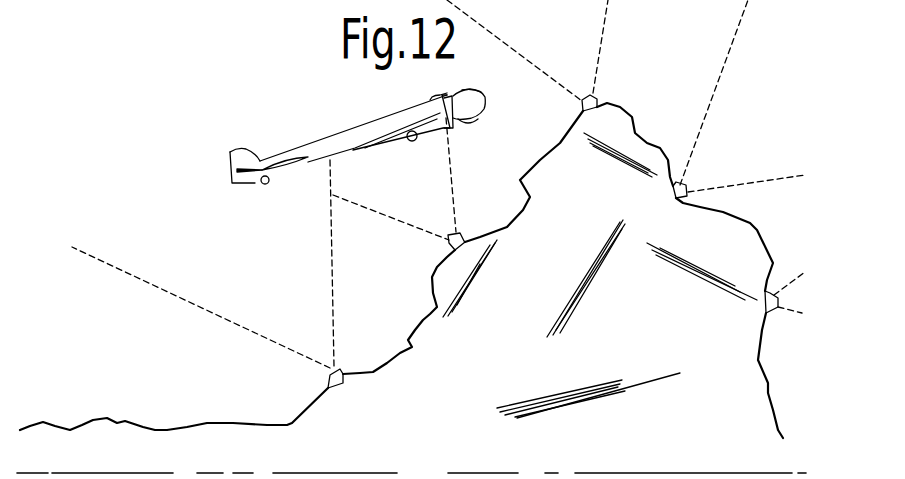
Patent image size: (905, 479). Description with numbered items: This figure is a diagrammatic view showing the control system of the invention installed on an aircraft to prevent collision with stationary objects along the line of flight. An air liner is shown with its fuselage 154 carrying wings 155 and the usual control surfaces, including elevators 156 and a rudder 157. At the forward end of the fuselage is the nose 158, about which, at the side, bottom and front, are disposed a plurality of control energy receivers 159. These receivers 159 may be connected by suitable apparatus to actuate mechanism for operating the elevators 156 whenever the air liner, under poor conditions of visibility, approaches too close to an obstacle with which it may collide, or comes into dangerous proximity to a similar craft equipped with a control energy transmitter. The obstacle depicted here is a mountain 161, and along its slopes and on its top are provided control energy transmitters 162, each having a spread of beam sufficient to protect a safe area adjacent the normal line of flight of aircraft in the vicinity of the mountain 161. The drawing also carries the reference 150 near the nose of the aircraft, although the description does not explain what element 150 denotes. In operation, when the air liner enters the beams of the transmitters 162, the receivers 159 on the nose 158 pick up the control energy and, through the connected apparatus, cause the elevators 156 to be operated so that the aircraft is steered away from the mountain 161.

The nose section of aircraft 150 is at (478, 97).
The fuselage 154 is at (342, 137).
The wings 155 is at (386, 142).
The elevators 156 is at (255, 162).
The rudder 157 is at (230, 163).
The nose of the fuselage 158 is at (478, 95).
The control energy receivers 159 is at (468, 121).
The mountain 161 is at (401, 270).
The control energy transmitters 162 is at (596, 99).